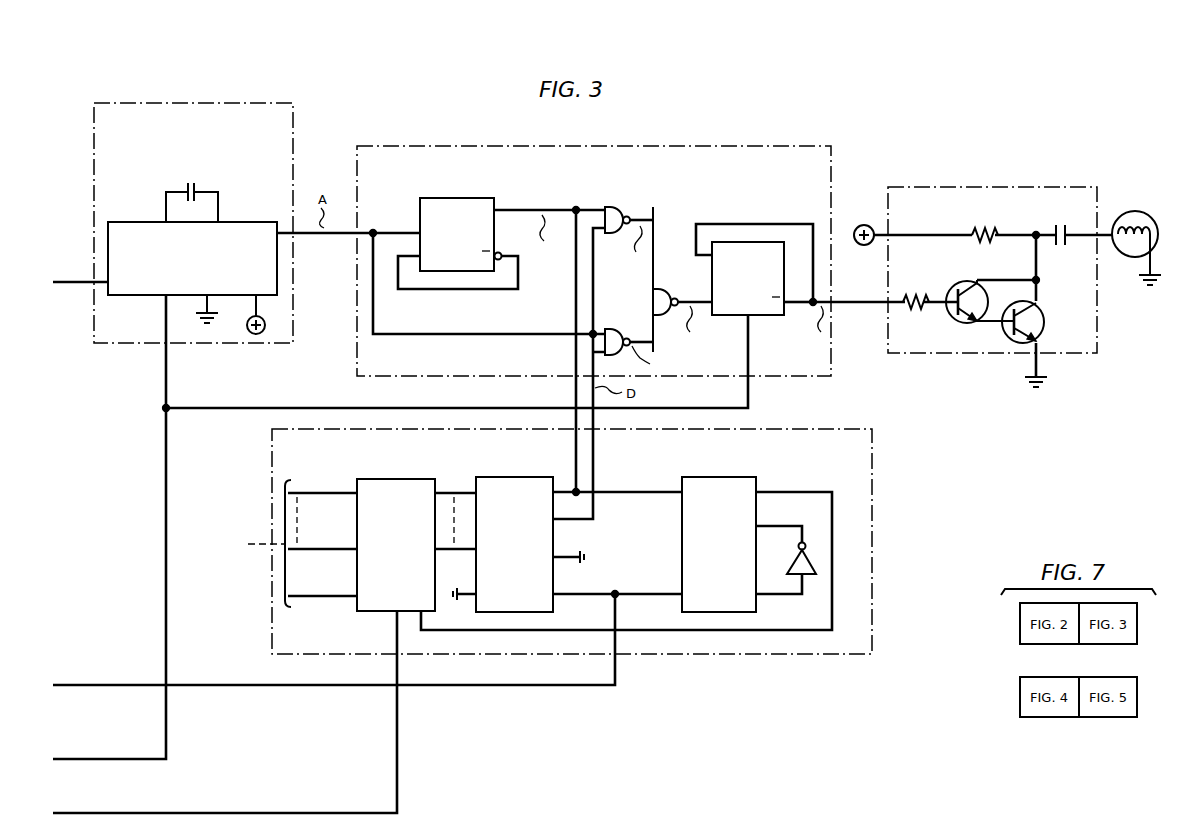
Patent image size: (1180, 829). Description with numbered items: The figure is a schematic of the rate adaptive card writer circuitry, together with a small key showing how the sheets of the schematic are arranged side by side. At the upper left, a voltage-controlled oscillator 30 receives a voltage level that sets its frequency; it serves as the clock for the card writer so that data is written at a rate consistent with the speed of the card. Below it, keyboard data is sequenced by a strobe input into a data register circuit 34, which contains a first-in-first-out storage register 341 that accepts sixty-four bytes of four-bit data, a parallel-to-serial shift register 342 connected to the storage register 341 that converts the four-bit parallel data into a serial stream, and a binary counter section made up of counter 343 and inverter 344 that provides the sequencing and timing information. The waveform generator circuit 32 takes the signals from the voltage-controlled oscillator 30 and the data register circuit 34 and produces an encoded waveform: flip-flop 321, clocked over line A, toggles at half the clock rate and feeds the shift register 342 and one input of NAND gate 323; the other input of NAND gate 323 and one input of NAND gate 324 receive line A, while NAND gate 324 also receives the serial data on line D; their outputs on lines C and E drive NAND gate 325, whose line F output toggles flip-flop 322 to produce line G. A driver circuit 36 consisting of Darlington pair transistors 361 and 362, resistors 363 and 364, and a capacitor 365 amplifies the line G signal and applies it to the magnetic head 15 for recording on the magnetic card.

The magnetic head 15 is at (1139, 229).
The voltage-controlled oscillator 30 is at (173, 223).
The waveform generator circuit 32 is at (630, 332).
The data register circuit 34 is at (462, 621).
The driver circuit 36 is at (983, 287).
The flip-flop 321 is at (448, 214).
The flip-flop 322 is at (755, 300).
The two-input NAND gate 323 is at (628, 209).
The two-input NAND gate 324 is at (628, 331).
The two-input NAND gate 325 is at (682, 279).
The storage register 341 is at (365, 613).
The parallel-to-serial shift register 342 is at (508, 491).
The counter 343 is at (719, 491).
The inverter 344 is at (791, 559).
The transistor 361 is at (980, 290).
The transistor 362 is at (1039, 322).
The resistor 363 is at (928, 291).
The resistor 364 is at (983, 225).
The capacitor 365 is at (1060, 222).